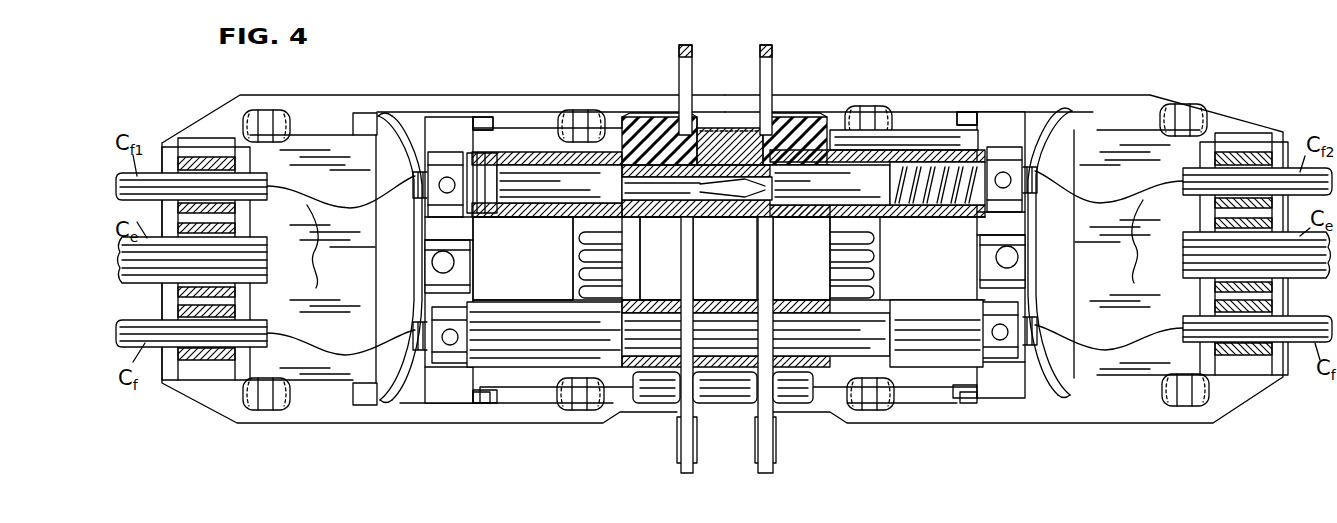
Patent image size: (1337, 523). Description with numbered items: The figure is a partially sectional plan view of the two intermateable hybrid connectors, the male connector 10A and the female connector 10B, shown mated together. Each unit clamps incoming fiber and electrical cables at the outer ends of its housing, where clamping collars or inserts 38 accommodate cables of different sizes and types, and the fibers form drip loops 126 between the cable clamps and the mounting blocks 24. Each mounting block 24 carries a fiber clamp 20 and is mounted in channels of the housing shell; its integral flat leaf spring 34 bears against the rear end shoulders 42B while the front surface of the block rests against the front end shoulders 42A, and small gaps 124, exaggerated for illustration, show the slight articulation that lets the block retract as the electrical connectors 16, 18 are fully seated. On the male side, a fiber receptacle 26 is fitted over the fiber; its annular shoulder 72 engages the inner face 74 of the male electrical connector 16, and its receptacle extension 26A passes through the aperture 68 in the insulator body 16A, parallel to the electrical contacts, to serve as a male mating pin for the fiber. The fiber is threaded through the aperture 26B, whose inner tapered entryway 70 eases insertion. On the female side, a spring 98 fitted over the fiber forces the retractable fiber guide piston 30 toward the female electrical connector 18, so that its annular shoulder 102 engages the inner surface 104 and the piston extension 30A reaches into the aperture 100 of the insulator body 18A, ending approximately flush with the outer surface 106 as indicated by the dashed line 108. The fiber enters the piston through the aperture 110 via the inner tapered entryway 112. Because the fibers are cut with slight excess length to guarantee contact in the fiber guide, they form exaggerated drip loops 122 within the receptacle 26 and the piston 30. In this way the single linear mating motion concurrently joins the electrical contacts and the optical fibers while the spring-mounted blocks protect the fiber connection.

The male connector 10A is at (239, 427).
The female connector 10B is at (1223, 429).
The male electrical connector 16 is at (665, 400).
The insulator body 16A is at (677, 80).
The female electrical connector 18 is at (795, 400).
The insulator body 18A is at (772, 100).
The fiber clamp 20 is at (418, 322).
The mounting block 24 is at (436, 117).
The fiber receptacle 26 is at (530, 150).
The receptacle extension 26A is at (710, 318).
The aperture 26B is at (655, 217).
The retractable fiber guide piston 30 is at (960, 303).
The piston extension 30A is at (875, 315).
The flat leaf spring 34 is at (395, 301).
The clamping collars or inserts 38 is at (215, 160).
The front end shoulder 42A is at (488, 403).
The rear end shoulder 42B is at (365, 113).
The aperture 68 is at (660, 145).
The inner tapered entryway 70 is at (625, 187).
The annular shoulder 72 is at (582, 112).
The inner face 74 is at (650, 140).
The spring 98 is at (940, 205).
The aperture 100 is at (800, 140).
The annular shoulder 102 is at (905, 130).
The inner surface 104 is at (840, 150).
The outer surface 106 is at (712, 120).
The dashed line 108 is at (716, 128).
The aperture 110 is at (778, 318).
The inner tapered entryway 112 is at (787, 183).
The drip loops 122 is at (513, 226).
The gaps 124 is at (475, 117).
The drip loops 126 is at (314, 252).